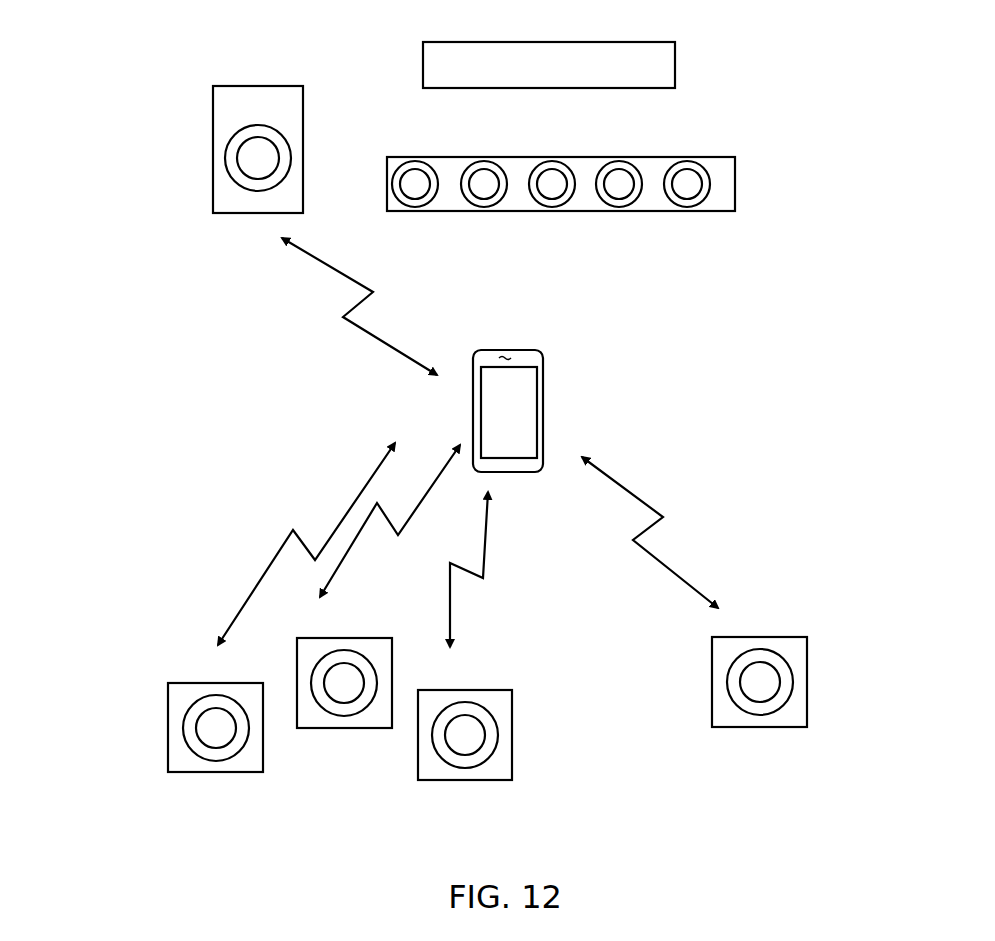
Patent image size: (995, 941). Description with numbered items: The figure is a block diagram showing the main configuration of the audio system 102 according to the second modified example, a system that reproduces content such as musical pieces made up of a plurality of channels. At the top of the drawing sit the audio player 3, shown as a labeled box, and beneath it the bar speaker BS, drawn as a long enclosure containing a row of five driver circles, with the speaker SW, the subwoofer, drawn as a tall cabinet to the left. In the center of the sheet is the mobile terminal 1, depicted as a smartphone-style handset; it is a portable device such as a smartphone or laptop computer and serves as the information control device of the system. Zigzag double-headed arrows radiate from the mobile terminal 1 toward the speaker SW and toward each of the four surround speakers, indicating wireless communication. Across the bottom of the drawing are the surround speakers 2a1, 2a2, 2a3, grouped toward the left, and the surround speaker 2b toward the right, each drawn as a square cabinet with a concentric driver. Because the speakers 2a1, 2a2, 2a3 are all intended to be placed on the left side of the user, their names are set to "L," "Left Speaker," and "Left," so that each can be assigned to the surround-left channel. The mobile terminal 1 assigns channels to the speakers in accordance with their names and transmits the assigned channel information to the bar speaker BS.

The mobile terminal 1 is at (543, 410).
The audio player 3 is at (628, 42).
The audio system 102 is at (778, 82).
The speaker (subwoofer) SW is at (278, 86).
The bar speaker BS is at (648, 157).
The surround speaker 2a1 is at (342, 638).
The surround speaker 2a2 is at (234, 683).
The surround speaker 2a3 is at (495, 690).
The surround speaker 2b is at (765, 637).